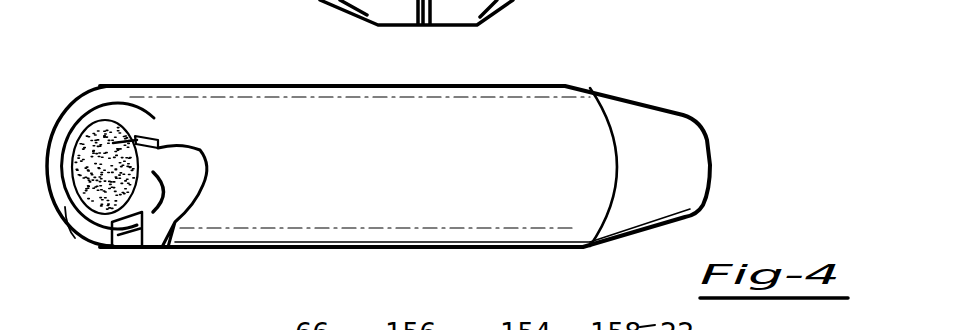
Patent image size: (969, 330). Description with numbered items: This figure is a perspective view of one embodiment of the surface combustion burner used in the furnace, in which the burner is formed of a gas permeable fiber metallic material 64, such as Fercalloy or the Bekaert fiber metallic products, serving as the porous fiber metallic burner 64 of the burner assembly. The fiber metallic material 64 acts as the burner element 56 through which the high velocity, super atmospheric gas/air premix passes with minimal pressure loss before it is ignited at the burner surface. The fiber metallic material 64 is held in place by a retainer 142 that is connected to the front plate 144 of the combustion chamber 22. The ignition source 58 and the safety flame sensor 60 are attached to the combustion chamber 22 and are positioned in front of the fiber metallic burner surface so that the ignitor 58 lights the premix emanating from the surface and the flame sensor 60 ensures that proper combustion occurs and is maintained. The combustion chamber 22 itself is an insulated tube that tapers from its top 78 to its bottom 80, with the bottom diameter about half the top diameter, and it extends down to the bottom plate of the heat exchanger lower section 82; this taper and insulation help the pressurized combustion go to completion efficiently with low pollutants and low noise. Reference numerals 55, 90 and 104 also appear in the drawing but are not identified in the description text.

The combustion chamber 22 is at (420, 200).
The end ring 55 is at (130, 107).
The burner element 56 is at (108, 203).
The ignition source 58 is at (147, 222).
The safety flame sensor 60 is at (162, 212).
The porous fiber metallic burner 64 is at (150, 135).
The top of combustion chamber 78 is at (218, 110).
The bottom of combustion chamber 80 is at (692, 158).
The heat exchanger lower section 82 is at (318, 1).
The base 90 is at (510, 0).
The member 104 is at (623, 6).
The retainer 142 is at (80, 106).
The front plate 144 is at (98, 213).